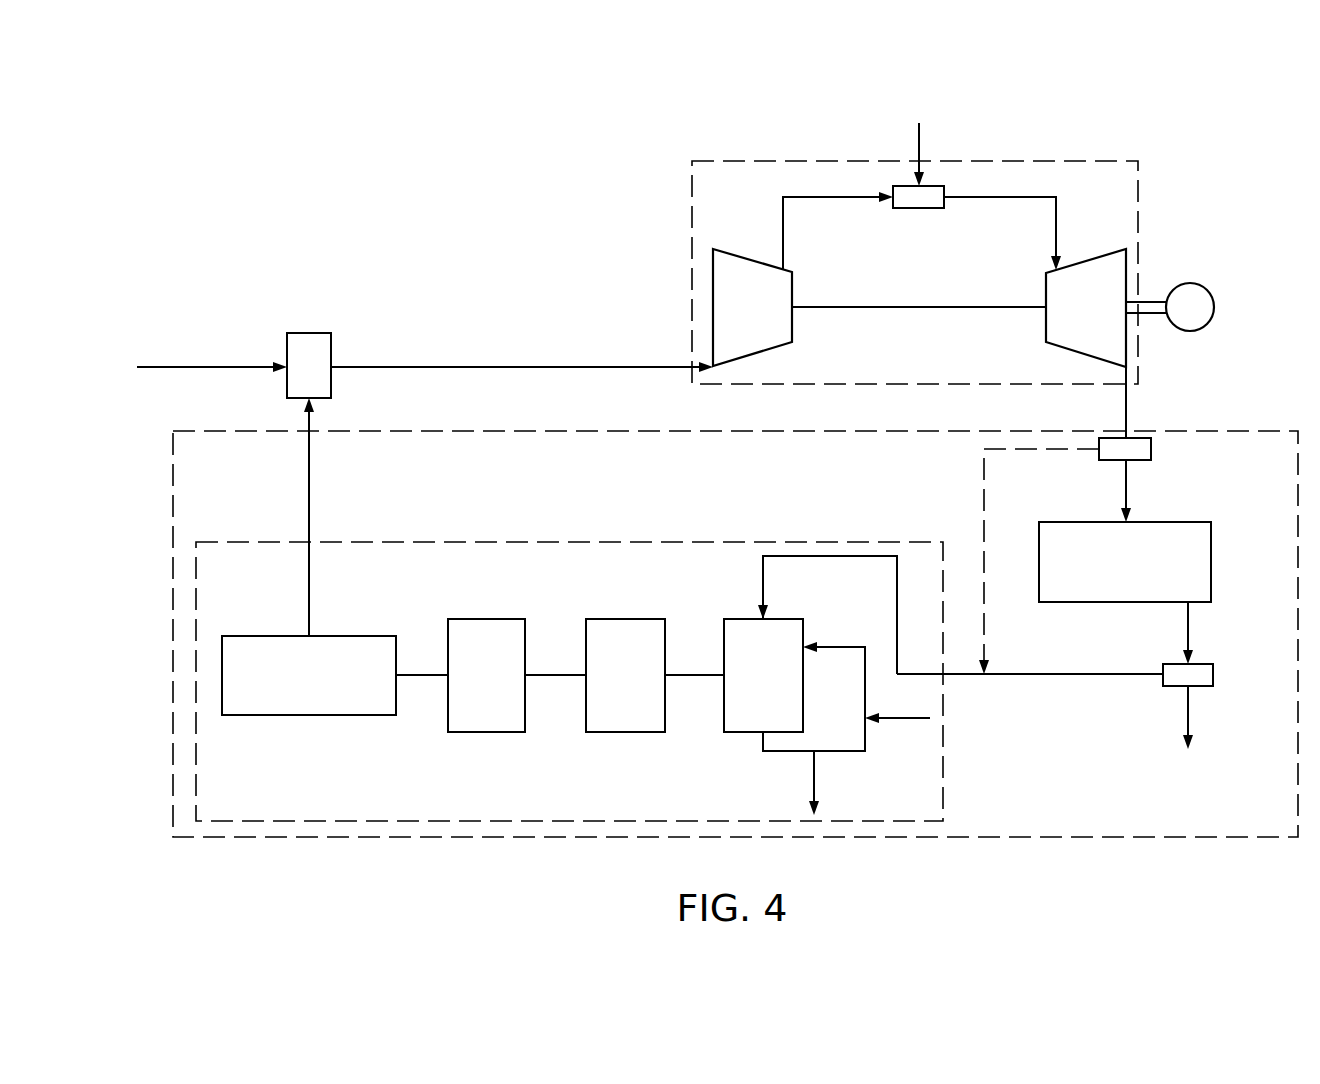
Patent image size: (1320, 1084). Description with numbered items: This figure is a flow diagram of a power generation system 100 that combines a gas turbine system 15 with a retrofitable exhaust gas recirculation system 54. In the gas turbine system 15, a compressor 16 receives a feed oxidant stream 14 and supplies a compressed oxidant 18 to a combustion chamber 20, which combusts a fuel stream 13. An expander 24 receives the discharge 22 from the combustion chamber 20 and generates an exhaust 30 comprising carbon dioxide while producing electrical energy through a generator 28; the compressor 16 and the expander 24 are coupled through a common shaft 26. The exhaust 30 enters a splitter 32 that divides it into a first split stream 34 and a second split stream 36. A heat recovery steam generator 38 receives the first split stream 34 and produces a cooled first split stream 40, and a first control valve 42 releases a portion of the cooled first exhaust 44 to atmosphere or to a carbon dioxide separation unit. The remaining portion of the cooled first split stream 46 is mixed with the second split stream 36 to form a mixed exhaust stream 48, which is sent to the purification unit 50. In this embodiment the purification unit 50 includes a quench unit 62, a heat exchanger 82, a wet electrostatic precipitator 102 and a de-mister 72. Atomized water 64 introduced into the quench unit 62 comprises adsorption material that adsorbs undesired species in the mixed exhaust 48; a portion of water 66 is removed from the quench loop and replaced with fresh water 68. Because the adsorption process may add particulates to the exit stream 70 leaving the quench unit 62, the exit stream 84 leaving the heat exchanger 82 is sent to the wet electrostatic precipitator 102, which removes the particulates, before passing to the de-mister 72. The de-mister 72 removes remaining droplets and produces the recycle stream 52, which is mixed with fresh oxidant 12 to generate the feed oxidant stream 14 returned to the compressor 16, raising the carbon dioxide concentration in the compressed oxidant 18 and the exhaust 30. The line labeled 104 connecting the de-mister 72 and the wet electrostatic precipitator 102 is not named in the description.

The power generation system 100 is at (312, 100).
The fresh oxidant 12 is at (187, 363).
The fuel stream 13 is at (925, 131).
The feed oxidant stream 14 is at (499, 365).
The gas turbine system 15 is at (1138, 200).
The compressor 16 is at (712, 269).
The compressed oxidant 18 is at (802, 197).
The combustion chamber 20 is at (914, 208).
The discharge 22 is at (977, 197).
The expander 24 is at (1127, 253).
The common shaft 26 is at (918, 308).
The generator 28 is at (1214, 307).
The exhaust 30 is at (1126, 395).
The splitter 32 is at (1151, 450).
The first split stream 34 is at (1126, 490).
The second split stream 36 is at (983, 472).
The heat recovery steam generator 38 is at (1211, 560).
The cooled first split stream 40 is at (1188, 630).
The first control valve 42 is at (1213, 672).
The cooled first exhaust portion 44 is at (1188, 715).
The remaining portion of the cooled first split stream 46 is at (1057, 680).
The mixed exhaust stream 48 is at (960, 680).
The purification unit 50 is at (196, 677).
The recycle stream 52 is at (309, 478).
The exhaust gas recirculation system 54 is at (173, 602).
The quench unit 62 is at (740, 618).
The atomized water 64 is at (830, 755).
The removed water portion 66 is at (812, 790).
The fresh water 68 is at (896, 722).
The exit stream from quench unit 70 is at (710, 680).
The de-mister 72 is at (309, 716).
The heat exchanger 82 is at (625, 735).
The exit stream from heat exchanger 84 is at (570, 672).
The wet electrostatic precipitator 102 is at (494, 733).
The pretreatment inlet line 104 is at (433, 672).